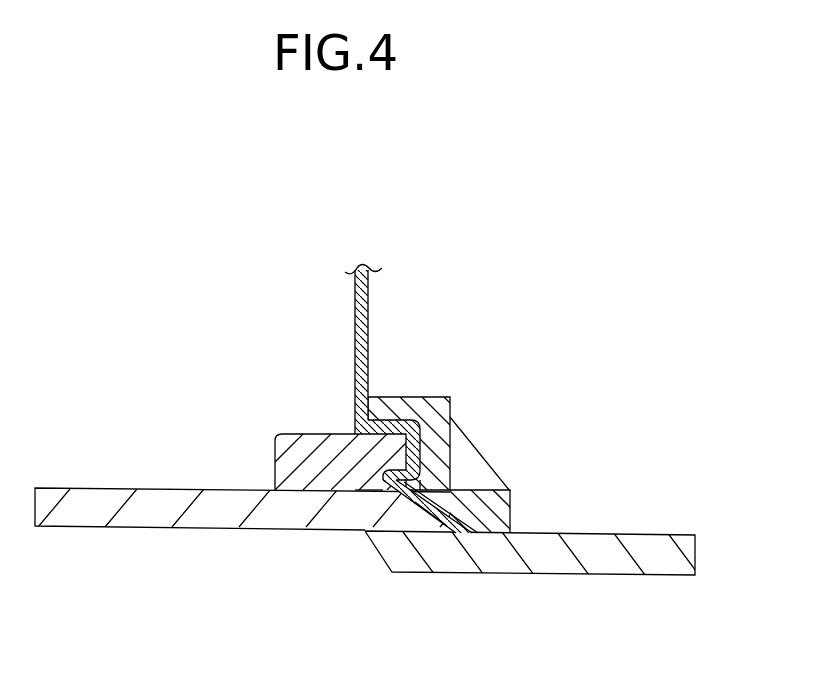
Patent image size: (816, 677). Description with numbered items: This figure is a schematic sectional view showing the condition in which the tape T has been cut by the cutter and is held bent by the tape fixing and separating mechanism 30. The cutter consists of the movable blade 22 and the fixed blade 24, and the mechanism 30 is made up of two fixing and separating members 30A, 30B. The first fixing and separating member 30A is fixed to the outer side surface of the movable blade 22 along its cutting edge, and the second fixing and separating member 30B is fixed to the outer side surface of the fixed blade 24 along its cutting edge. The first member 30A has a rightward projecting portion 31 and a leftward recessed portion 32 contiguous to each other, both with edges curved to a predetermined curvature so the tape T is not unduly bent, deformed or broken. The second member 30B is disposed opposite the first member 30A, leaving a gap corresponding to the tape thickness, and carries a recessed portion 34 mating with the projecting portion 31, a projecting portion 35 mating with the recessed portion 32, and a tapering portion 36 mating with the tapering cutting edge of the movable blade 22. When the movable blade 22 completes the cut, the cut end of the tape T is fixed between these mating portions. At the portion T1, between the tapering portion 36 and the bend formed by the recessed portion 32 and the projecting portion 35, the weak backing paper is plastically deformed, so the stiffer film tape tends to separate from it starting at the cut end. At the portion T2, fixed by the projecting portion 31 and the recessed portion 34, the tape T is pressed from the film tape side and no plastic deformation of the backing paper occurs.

The movable blade 22 is at (140, 510).
The fixed blade 24 is at (655, 558).
The tape fixing and separating mechanism 30 is at (472, 380).
The first fixing and separating member 30A is at (274, 448).
The second fixing and separating member 30B is at (512, 515).
The projecting portion 31 is at (351, 433).
The recessed portion 32 is at (372, 478).
The recessed portion 34 is at (421, 458).
The projecting portion 35 is at (470, 528).
The tapering portion 36 is at (440, 505).
The tape T is at (371, 310).
The portion of the tape T1 is at (375, 490).
The portion of the tape T2 is at (422, 458).